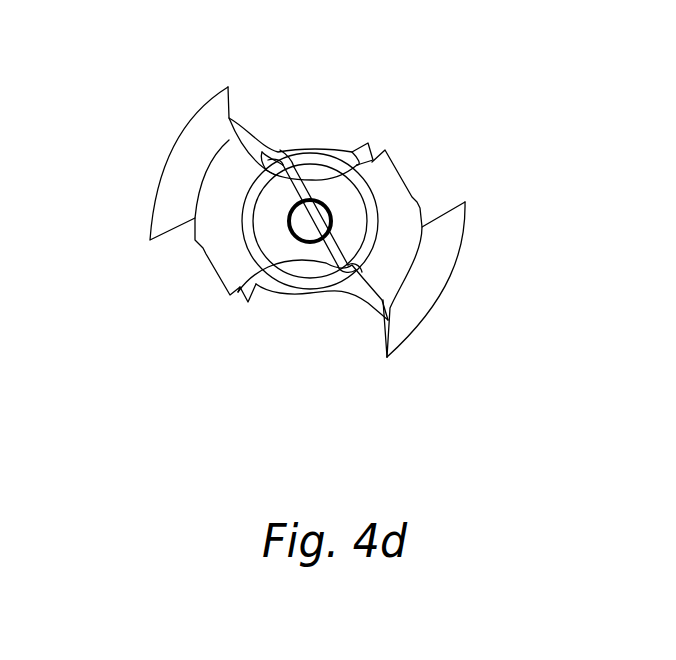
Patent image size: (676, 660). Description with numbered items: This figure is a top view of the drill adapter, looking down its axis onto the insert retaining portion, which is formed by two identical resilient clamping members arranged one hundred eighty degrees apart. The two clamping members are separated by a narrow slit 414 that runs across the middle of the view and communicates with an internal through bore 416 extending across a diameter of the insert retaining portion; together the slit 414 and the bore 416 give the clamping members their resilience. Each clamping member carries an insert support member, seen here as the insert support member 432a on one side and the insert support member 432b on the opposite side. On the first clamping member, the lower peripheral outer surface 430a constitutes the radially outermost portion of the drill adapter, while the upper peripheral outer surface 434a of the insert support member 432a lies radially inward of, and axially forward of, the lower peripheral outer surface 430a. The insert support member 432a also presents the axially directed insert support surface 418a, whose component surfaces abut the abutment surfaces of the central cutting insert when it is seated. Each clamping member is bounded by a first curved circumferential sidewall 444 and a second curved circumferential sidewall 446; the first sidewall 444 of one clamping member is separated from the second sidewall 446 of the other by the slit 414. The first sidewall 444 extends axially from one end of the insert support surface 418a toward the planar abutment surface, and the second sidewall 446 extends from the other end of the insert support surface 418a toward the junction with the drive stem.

The slit 414 is at (316, 185).
The internal through bore 416 is at (286, 148).
The axially directed insert support surface 418a is at (402, 212).
The lower peripheral outer surface 430a is at (423, 333).
The insert support member 432a is at (423, 237).
The insert support member 432b is at (205, 168).
The upper peripheral outer surface 434a is at (403, 290).
The first curved circumferential sidewall 444 is at (257, 142).
The second curved circumferential sidewall 446 is at (352, 168).